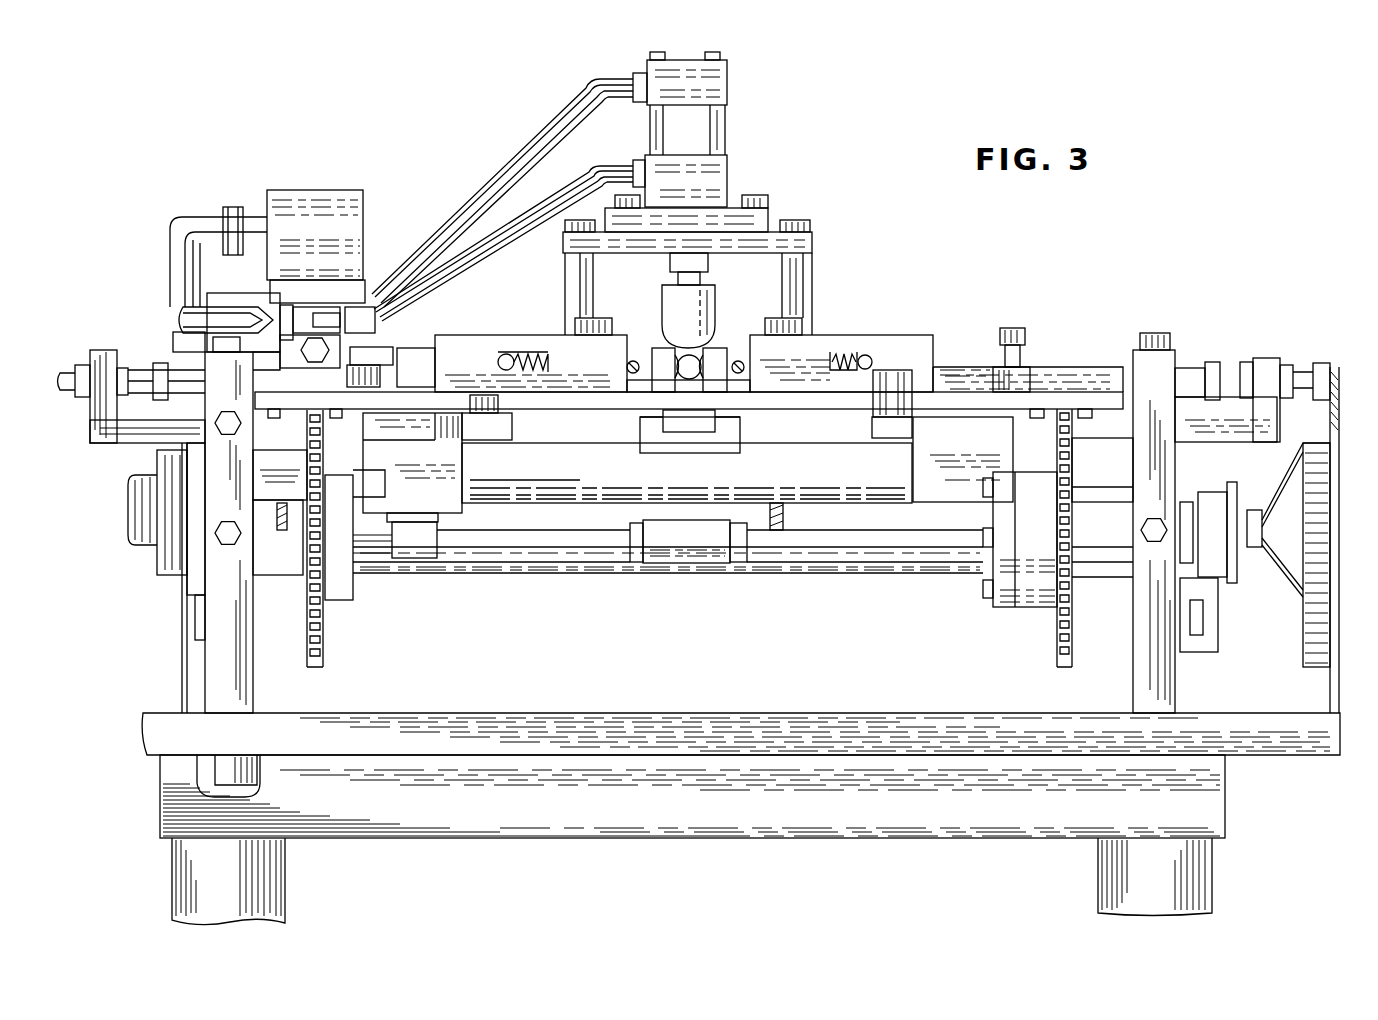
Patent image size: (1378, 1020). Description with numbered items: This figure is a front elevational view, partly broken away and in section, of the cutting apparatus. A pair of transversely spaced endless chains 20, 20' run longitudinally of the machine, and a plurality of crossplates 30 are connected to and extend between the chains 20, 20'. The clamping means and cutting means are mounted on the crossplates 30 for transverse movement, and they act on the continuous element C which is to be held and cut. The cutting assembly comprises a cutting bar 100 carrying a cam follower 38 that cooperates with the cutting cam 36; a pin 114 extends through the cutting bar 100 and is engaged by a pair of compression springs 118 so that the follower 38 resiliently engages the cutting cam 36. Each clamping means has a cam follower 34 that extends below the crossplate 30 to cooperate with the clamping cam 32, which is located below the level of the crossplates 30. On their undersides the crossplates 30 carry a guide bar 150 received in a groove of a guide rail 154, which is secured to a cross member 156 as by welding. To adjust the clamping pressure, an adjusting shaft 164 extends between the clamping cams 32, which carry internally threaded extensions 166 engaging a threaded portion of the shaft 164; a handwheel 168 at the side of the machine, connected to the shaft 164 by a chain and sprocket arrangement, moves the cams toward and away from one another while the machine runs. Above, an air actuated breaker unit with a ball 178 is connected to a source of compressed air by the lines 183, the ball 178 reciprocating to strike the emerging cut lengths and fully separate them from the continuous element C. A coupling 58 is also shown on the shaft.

The lines 183 is at (517, 150).
The ball 178 is at (695, 312).
The continuous element C is at (692, 358).
The compression springs 118 is at (838, 350).
The pin 114 is at (866, 355).
The cutting bar 100 is at (948, 360).
The cam follower 38 is at (380, 362).
The cutting cam 36 is at (1088, 382).
The crossplates 30 is at (573, 400).
The cam follower 34 is at (470, 430).
The clamping cam 32 is at (450, 422).
The cross member 156 is at (598, 472).
The guide bar 150 is at (728, 412).
The guide rail 154 is at (720, 440).
The extensions 166 is at (422, 540).
The adjusting shaft 164 is at (553, 545).
The coupling 58 is at (768, 568).
The endless chain 20' is at (323, 538).
The endless chain 20 is at (1045, 538).
The handwheel 168 is at (1303, 598).